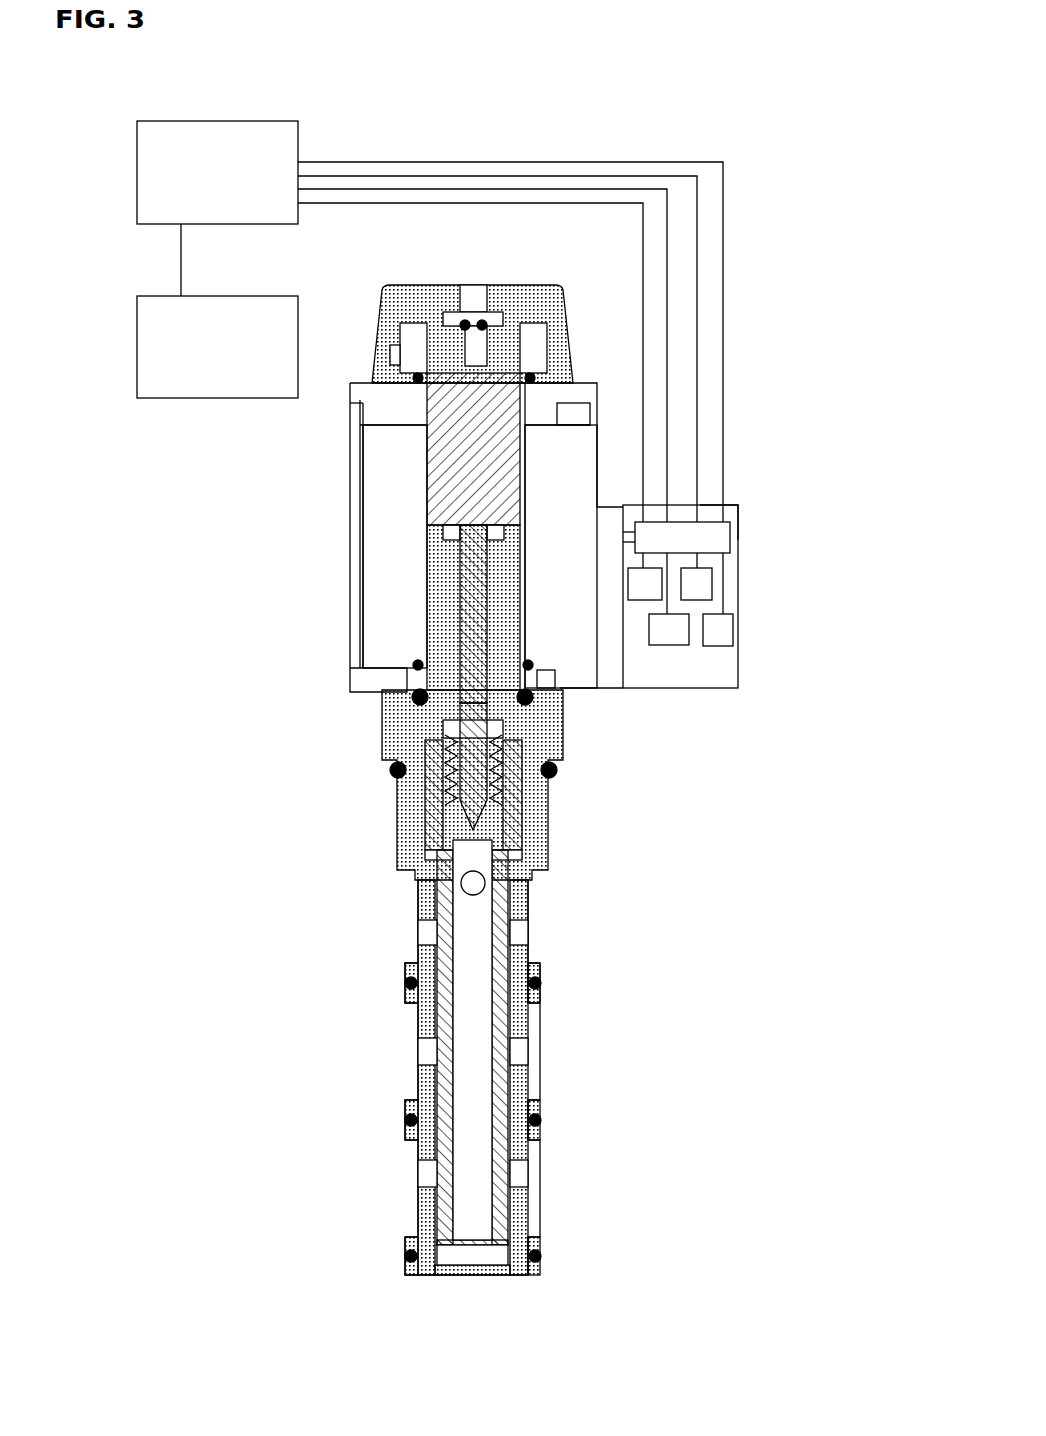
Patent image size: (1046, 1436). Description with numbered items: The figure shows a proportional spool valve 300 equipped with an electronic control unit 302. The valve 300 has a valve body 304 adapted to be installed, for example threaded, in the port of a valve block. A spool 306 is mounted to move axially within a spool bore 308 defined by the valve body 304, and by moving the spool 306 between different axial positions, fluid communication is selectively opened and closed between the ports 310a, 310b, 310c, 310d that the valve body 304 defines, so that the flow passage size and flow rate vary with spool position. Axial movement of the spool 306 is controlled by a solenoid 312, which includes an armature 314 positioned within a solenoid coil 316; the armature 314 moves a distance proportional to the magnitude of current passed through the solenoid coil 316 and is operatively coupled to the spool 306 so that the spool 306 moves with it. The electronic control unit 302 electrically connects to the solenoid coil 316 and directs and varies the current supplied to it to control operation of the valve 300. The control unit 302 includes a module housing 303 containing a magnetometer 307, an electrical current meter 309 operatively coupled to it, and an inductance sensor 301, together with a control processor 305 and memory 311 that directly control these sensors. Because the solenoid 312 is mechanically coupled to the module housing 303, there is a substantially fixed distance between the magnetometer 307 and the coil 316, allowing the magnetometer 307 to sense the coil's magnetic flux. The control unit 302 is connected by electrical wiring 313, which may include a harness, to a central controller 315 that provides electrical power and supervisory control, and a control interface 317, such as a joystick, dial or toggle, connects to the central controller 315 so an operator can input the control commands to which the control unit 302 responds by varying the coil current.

The proportional spool valve 300 is at (399, 831).
The inductance sensor 301 is at (722, 646).
The electronic control unit 302 is at (739, 605).
The module housing 303 is at (733, 505).
The valve body 304 is at (418, 890).
The control processor 305 is at (725, 538).
The spool 306 is at (505, 1010).
The magnetometer 307 is at (660, 645).
The spool bore 308 is at (440, 1130).
The electrical current meter 309 is at (695, 600).
The port 310a is at (476, 1257).
The port 310b is at (517, 1175).
The port 310c is at (518, 1046).
The port 310d is at (522, 925).
The memory 311 is at (645, 600).
The solenoid 312 is at (340, 560).
The electrical wiring 313 is at (423, 162).
The armature 314 is at (428, 457).
The central controller 315 is at (272, 121).
The solenoid coil 316 is at (360, 500).
The control interface 317 is at (264, 296).